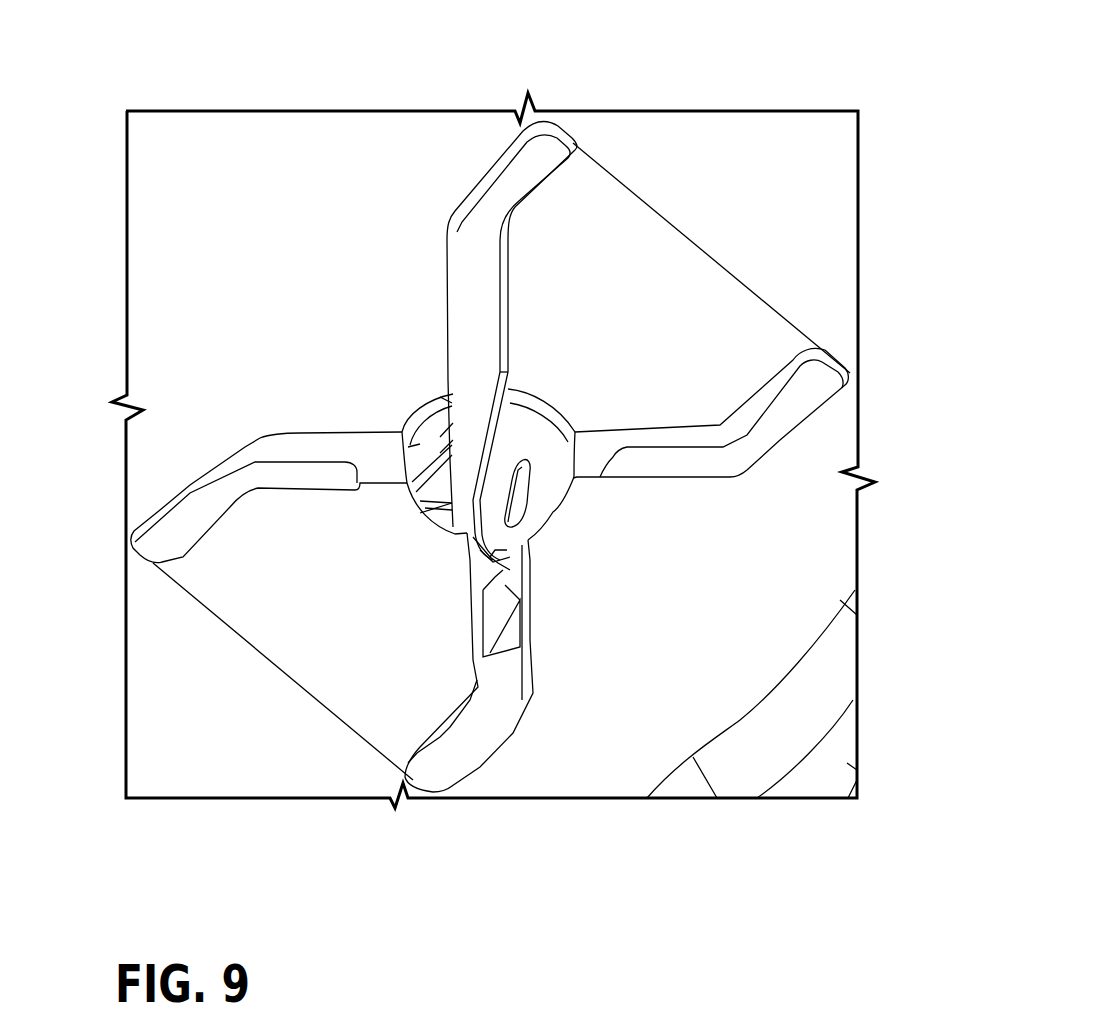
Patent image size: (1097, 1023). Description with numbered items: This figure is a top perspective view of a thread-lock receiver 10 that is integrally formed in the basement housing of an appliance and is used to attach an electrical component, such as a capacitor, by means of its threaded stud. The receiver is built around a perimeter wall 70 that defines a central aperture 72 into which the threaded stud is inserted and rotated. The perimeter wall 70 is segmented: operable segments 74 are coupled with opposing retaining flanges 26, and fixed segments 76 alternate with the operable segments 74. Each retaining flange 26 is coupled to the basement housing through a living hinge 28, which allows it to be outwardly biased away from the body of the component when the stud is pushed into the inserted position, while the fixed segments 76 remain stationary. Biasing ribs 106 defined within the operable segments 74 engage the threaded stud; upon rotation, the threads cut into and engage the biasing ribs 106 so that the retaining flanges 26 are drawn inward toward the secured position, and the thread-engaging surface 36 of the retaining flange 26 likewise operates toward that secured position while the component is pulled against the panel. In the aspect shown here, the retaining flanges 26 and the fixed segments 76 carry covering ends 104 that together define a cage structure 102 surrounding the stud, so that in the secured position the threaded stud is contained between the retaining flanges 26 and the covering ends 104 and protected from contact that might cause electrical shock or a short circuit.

The thread-lock receiver 10 is at (347, 372).
The perimeter wall 70 is at (438, 412).
The operable segments 74 is at (533, 432).
The cage structure 102 is at (513, 435).
The central aperture 72 is at (558, 440).
The biasing ribs 106 is at (522, 505).
The fixed segments 76 is at (425, 445).
The thread-engaging surface 36 is at (432, 508).
The living hinge 28 is at (280, 655).
The retaining flange 26 is at (385, 655).
The covering ends 104 is at (522, 537).